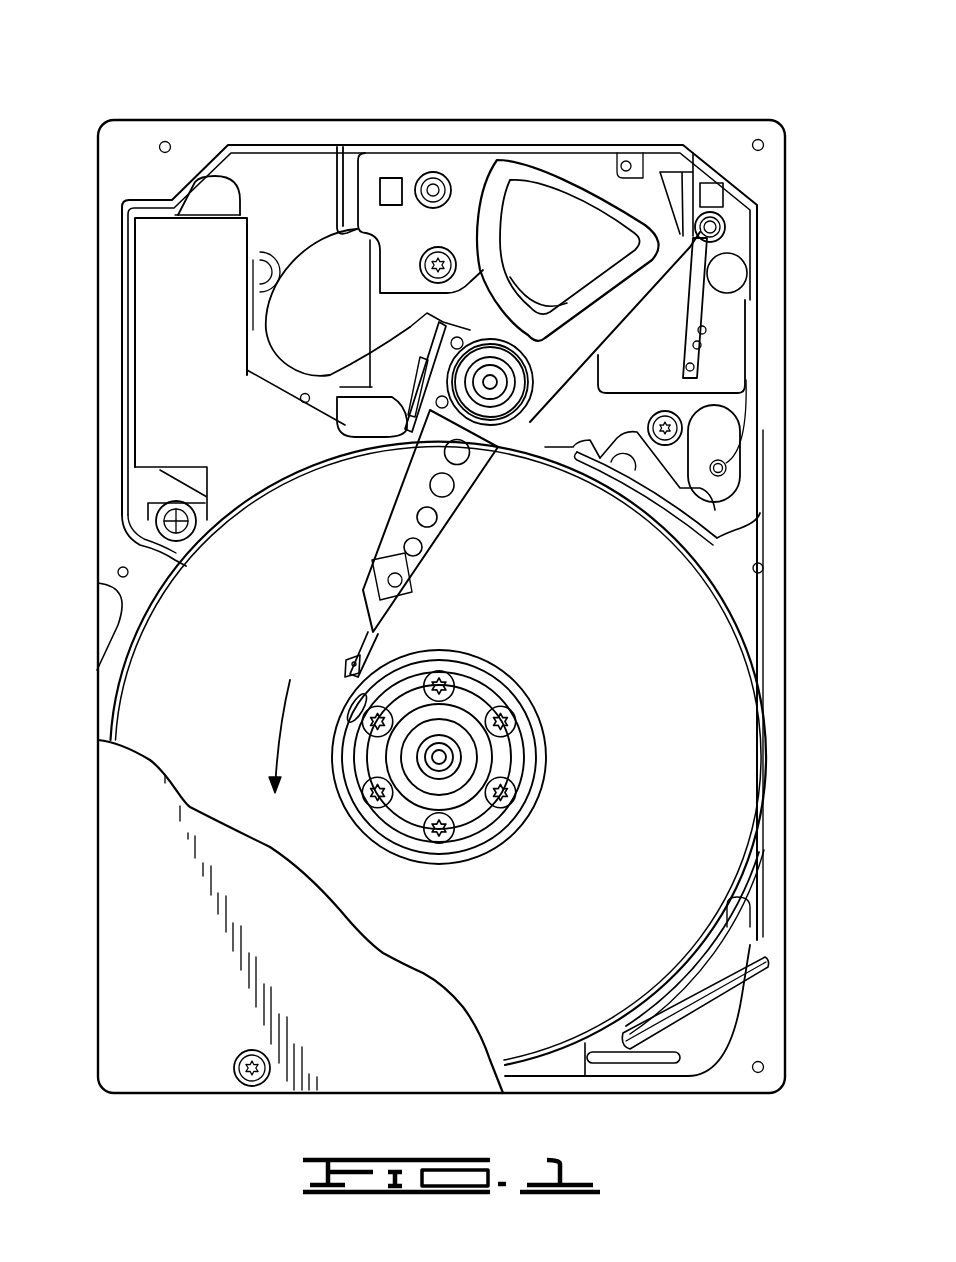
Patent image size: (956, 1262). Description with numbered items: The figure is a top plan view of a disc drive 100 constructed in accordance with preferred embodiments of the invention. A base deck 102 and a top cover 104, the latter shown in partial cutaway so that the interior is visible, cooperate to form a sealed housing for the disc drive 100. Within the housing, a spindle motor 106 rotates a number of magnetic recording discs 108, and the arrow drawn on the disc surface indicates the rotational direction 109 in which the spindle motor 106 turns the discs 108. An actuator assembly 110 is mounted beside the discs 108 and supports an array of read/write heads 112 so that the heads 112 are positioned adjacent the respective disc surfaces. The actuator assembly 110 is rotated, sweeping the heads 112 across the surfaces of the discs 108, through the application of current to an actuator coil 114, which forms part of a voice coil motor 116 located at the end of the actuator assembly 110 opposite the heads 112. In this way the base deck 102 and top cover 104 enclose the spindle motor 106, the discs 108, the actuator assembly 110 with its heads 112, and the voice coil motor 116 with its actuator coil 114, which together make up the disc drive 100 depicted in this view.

The disc drive 100 is at (168, 92).
The base deck 102 is at (272, 375).
The top cover 104 is at (125, 797).
The spindle motor 106 is at (455, 728).
The magnetic recording discs 108 is at (705, 745).
The rotational direction 109 is at (280, 712).
The actuator assembly 110 is at (503, 450).
The read/write heads 112 is at (345, 667).
The actuator coil 114 is at (553, 173).
The voice coil motor (VCM) 116 is at (598, 157).